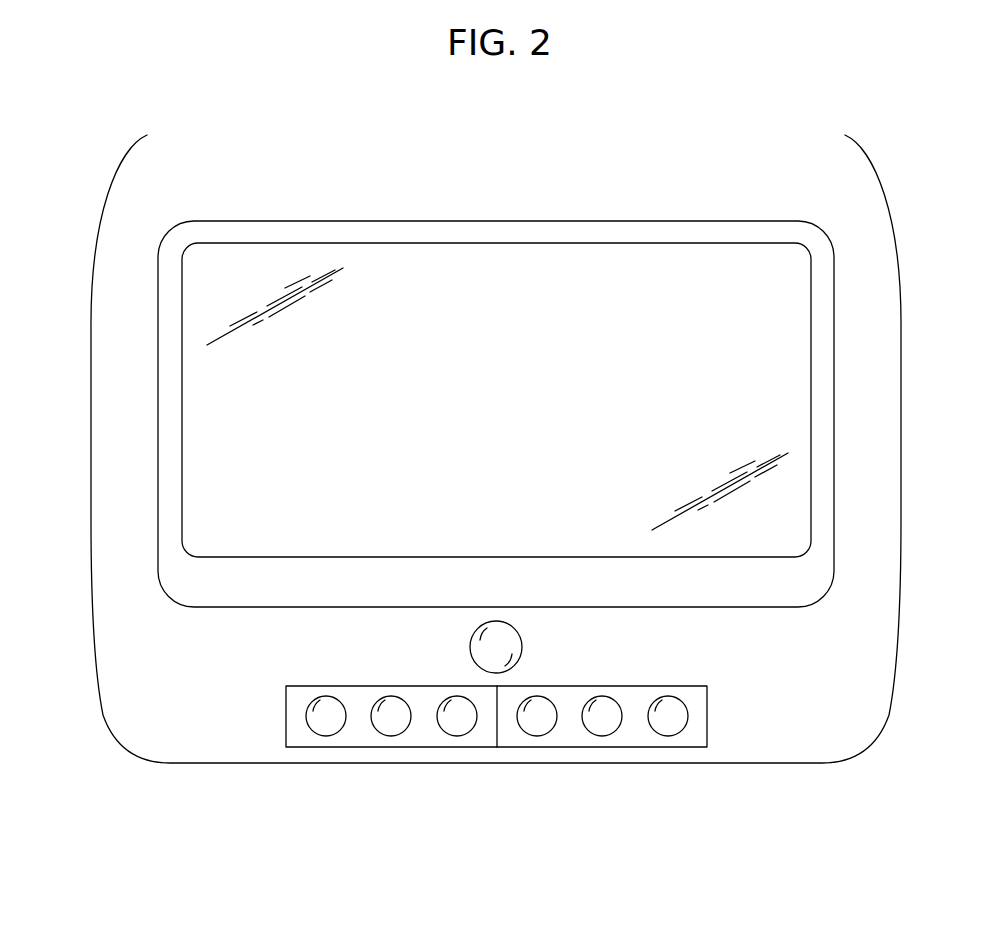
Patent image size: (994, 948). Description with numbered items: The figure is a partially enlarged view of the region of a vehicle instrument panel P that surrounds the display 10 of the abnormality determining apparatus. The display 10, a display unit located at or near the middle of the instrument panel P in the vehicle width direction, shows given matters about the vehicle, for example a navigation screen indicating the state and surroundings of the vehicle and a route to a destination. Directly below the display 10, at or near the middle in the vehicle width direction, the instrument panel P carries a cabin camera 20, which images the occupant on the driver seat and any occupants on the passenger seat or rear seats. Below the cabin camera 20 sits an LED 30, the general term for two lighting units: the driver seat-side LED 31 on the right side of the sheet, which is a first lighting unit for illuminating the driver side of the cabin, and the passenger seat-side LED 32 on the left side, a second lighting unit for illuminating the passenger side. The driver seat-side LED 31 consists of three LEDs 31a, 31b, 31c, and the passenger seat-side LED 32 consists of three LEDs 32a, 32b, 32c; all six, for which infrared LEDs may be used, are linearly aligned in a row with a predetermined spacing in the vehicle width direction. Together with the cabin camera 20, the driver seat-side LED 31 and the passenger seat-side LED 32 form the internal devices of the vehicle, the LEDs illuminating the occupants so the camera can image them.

The instrument panel P is at (158, 641).
The display 10 is at (549, 302).
The cabin camera 20 is at (522, 645).
The LED 30 is at (496, 803).
The driver seat-side LED 31 is at (607, 783).
The LED 31a is at (671, 758).
The LED 31b is at (602, 736).
The LED 31c is at (537, 736).
The passenger seat-side LED 32 is at (392, 783).
The LED 32a is at (457, 758).
The LED 32b is at (391, 736).
The LED 32c is at (326, 736).